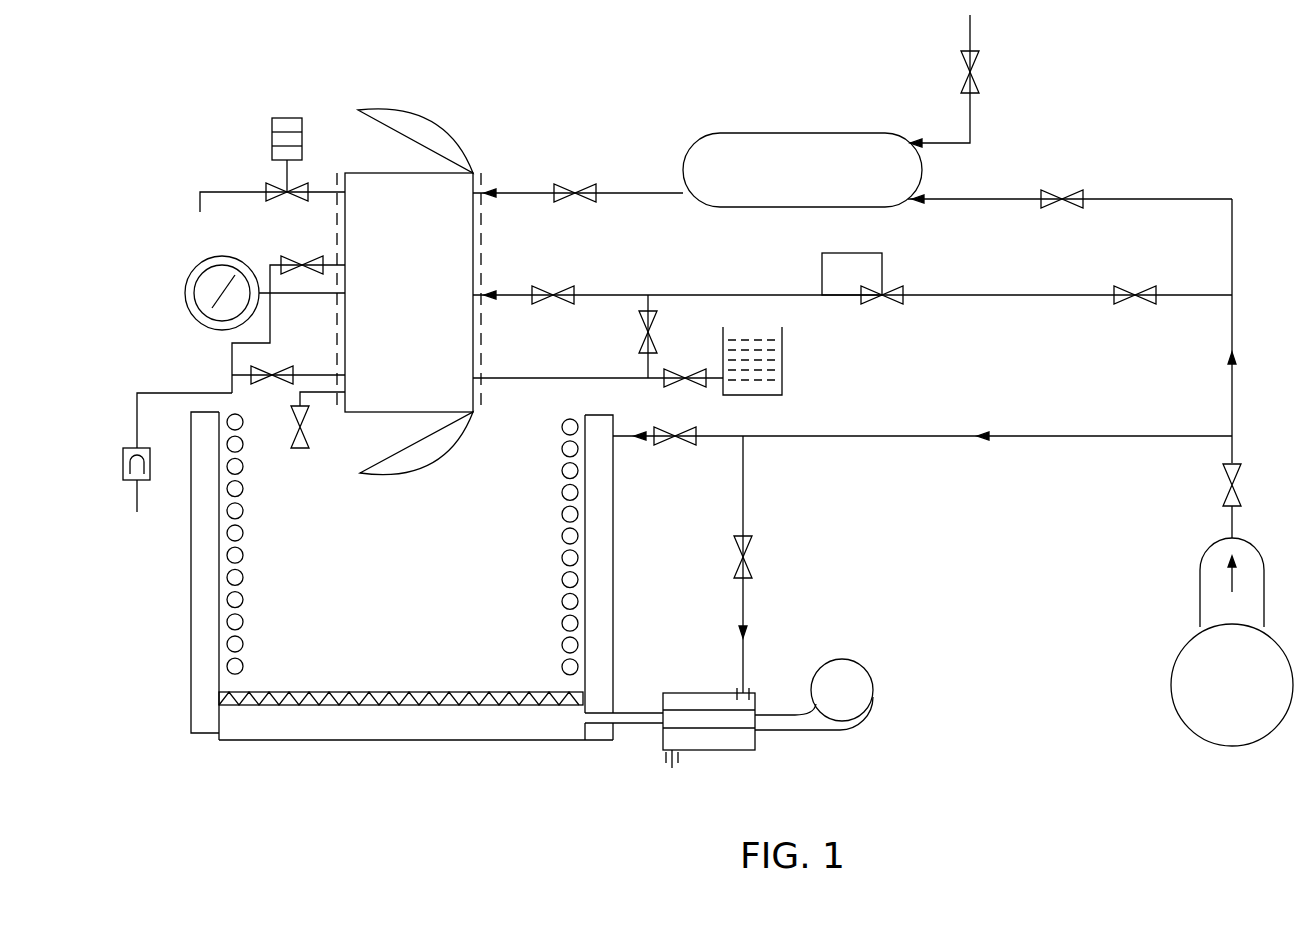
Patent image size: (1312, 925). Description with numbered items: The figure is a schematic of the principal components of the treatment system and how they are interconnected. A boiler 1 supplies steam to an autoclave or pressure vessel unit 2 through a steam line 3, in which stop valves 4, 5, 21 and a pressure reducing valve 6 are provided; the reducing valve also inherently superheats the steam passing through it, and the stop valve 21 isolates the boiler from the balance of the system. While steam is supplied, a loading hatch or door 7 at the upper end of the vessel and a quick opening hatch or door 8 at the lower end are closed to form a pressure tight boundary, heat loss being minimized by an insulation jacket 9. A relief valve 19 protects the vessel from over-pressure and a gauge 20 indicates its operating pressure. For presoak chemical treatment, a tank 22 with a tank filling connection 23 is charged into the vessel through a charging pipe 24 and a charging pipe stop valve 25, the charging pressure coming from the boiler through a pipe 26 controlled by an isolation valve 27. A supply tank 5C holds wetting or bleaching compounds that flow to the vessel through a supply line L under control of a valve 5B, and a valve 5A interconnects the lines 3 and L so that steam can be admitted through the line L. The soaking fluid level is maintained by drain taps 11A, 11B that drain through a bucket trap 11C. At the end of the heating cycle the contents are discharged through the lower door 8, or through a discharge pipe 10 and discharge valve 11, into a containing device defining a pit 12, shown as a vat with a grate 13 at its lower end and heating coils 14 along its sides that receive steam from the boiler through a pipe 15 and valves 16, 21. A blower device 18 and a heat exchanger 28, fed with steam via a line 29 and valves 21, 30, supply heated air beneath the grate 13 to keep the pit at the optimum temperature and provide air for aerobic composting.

The boiler 1 is at (1262, 612).
The pressure vessel unit 2 is at (482, 351).
The steam line 3 is at (958, 296).
The stop valve 4 is at (1123, 292).
The stop valve 5 is at (548, 288).
The valve 5A is at (659, 333).
The valve 5B is at (686, 364).
The supply tank 5C is at (783, 354).
The pressure reducing valve 6 is at (882, 262).
The loading hatch 7 is at (426, 122).
The quick opening hatch 8 is at (421, 470).
The insulation jacket 9 is at (484, 250).
The discharge pipe 10 is at (320, 378).
The discharge valve 11 is at (305, 436).
The drain tap 11A is at (312, 262).
The drain tap 11B is at (243, 384).
The bucket trap 11C is at (123, 462).
The pit 12 is at (190, 590).
The grate 13 is at (401, 683).
The heating coils 14 is at (563, 585).
The pipe 15 is at (630, 436).
The valve 16 is at (676, 433).
The blower device 18 is at (875, 690).
The relief valve 19 is at (276, 185).
The gauge 20 is at (256, 262).
The stop valve 21 is at (1241, 487).
The tank 22 is at (790, 132).
The tank filling connection 23 is at (982, 70).
The charging pipe 24 is at (497, 198).
The charging pipe stop valve 25 is at (572, 186).
The pipe 26 is at (1240, 250).
The isolation valve 27 is at (1057, 192).
The heat exchanger 28 is at (722, 692).
The line 29 is at (746, 478).
The valve 30 is at (750, 560).
The supply line L is at (516, 380).